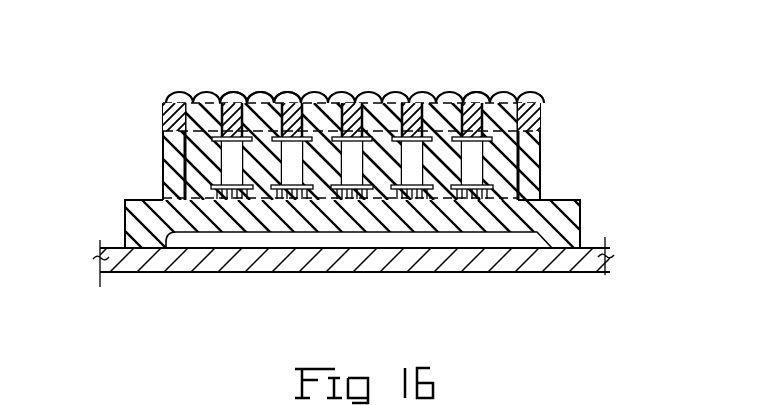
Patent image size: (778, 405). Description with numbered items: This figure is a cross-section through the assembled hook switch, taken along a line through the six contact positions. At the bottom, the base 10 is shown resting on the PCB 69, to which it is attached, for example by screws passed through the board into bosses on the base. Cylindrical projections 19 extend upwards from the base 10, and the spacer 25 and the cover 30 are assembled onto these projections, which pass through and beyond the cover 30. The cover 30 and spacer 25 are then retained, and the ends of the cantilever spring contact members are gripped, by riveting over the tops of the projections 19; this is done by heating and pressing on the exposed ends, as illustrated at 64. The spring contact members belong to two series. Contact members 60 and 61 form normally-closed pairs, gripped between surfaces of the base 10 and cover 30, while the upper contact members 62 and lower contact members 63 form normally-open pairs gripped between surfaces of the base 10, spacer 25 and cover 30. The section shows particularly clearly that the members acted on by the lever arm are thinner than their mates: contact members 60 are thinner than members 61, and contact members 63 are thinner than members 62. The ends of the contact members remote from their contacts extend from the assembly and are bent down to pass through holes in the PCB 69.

The base 10 is at (572, 217).
The cylindrical projections 19 is at (203, 151).
The spacer 25 is at (533, 178).
The cover 30 is at (535, 117).
The cantilever spring contact member 60 is at (468, 97).
The cantilever spring contact member 61 is at (421, 237).
The upper contact member 62 is at (293, 97).
The lower contact member 63 is at (224, 237).
The rivetted-over ends of projections 64 is at (468, 98).
The PCB 69 is at (137, 262).